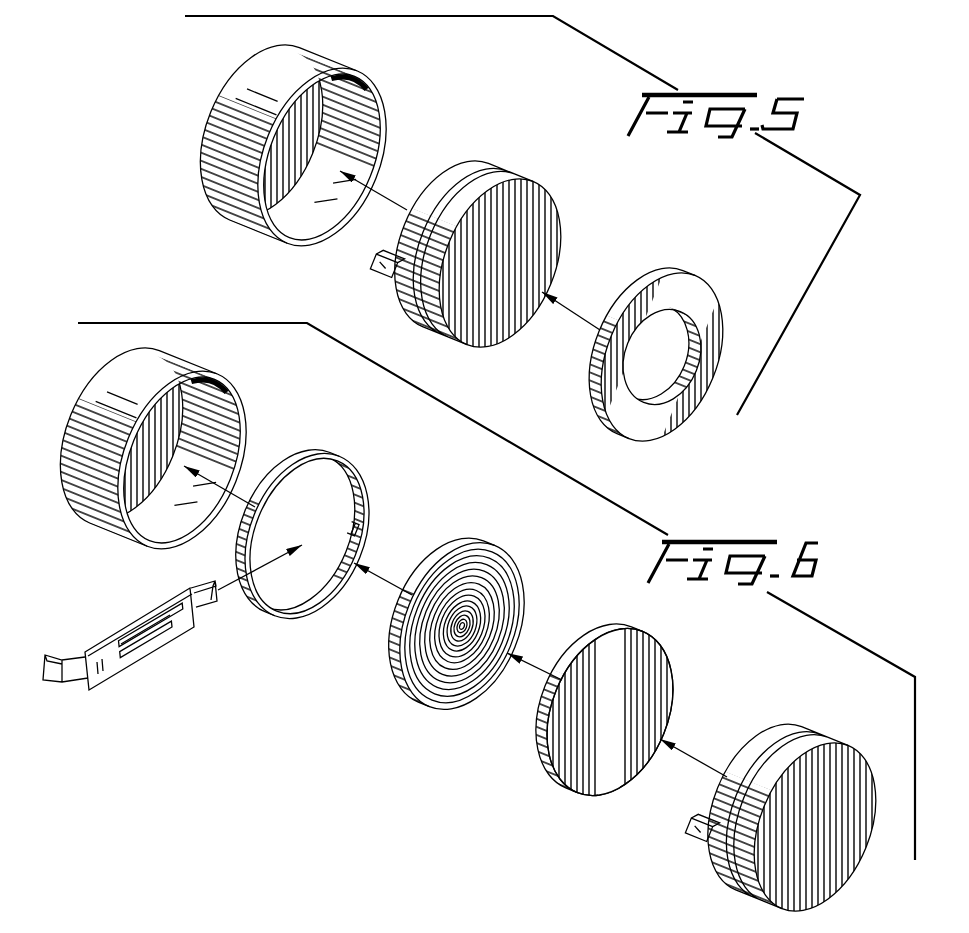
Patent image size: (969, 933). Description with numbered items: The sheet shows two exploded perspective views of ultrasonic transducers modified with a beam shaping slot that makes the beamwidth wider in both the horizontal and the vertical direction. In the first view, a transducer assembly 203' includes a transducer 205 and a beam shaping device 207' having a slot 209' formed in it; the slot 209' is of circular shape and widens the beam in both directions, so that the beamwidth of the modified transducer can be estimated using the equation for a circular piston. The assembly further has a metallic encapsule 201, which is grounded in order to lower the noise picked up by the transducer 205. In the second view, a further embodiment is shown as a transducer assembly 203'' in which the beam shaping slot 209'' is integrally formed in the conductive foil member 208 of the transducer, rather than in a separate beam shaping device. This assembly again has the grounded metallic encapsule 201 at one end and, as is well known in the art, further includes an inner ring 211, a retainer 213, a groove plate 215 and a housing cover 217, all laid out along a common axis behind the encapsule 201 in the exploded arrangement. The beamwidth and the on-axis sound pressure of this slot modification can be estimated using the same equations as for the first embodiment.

In FIG. 5, the metallic encapsule 201 is at (225, 187).
In FIG. 6, the metallic encapsule 201 is at (100, 517).
In FIG. 5, the transducer assembly 203' is at (513, 106).
In FIG. 6, the transducer assembly 203'' is at (294, 807).
In FIG. 5, the transducer 205 is at (520, 178).
In FIG. 5, the beam shaping device 207' is at (680, 347).
In FIG. 5, the slot 209' is at (565, 390).
In FIG. 6, the conductive foil member 208 is at (670, 645).
In FIG. 6, the beam shaping slot 209'' is at (694, 699).
In FIG. 6, the inner ring 211 is at (368, 482).
In FIG. 6, the retainer 213 is at (108, 667).
In FIG. 6, the groove plate 215 is at (515, 554).
In FIG. 6, the housing cover 217 is at (728, 847).